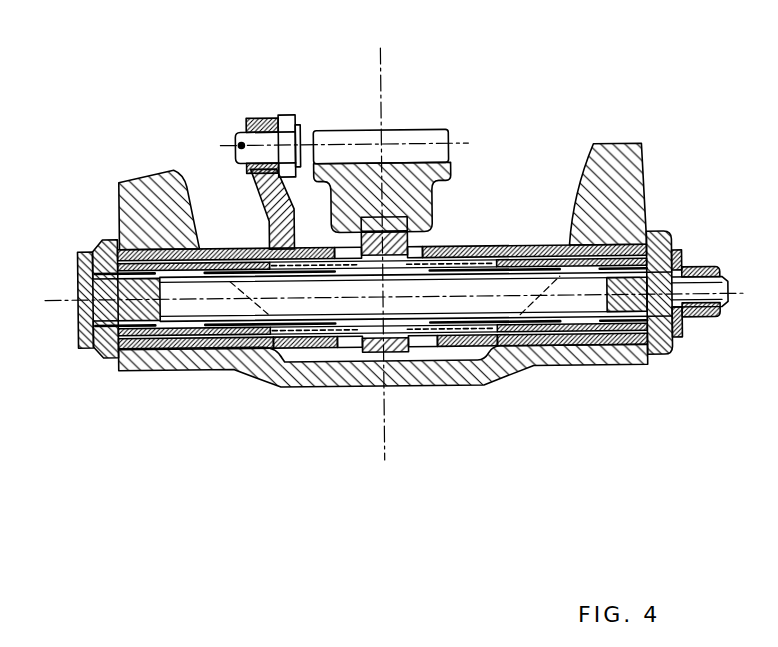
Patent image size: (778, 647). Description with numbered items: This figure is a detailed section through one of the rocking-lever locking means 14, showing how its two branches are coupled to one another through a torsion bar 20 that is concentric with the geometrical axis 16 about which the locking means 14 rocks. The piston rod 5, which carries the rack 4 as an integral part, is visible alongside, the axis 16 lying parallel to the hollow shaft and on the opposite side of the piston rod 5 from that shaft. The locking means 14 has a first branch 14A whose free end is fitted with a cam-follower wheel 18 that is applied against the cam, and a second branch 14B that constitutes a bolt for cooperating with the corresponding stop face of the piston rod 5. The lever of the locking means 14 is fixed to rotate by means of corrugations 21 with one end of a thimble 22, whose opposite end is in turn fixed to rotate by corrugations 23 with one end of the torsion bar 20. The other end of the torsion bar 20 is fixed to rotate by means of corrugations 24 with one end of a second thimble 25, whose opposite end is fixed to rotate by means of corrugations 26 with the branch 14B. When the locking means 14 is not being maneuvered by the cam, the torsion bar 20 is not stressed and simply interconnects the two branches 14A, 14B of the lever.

The rack 4 is at (440, 128).
The piston rod 5 is at (430, 181).
The locking means 14 is at (258, 222).
The first branch 14A is at (252, 173).
The second branch 14B is at (410, 237).
The geometrical axis 16 is at (532, 303).
The cam-follower wheel 18 is at (290, 118).
The torsion bar 20 is at (233, 310).
The corrugations 21 is at (323, 345).
The thimble 22 is at (203, 327).
The corrugations 23 is at (95, 357).
The corrugations 24 is at (660, 353).
The thimble 25 is at (595, 347).
The corrugations 26 is at (457, 335).